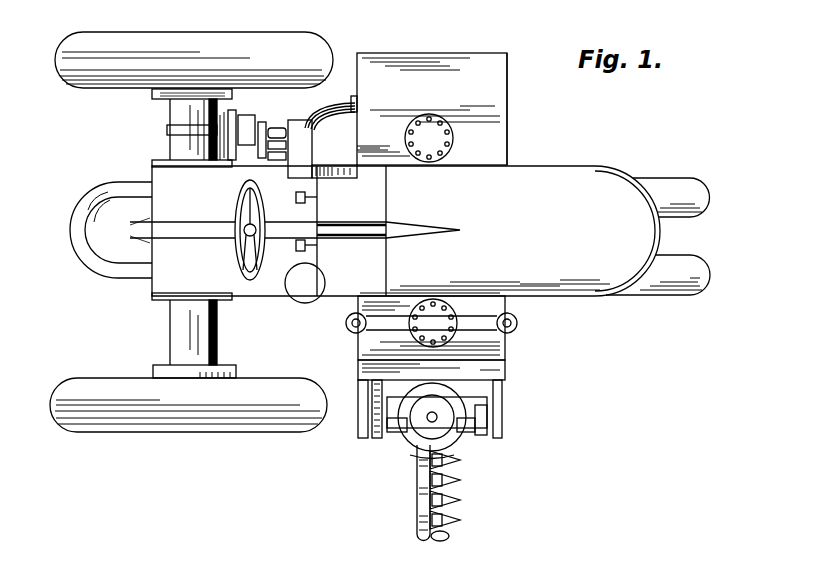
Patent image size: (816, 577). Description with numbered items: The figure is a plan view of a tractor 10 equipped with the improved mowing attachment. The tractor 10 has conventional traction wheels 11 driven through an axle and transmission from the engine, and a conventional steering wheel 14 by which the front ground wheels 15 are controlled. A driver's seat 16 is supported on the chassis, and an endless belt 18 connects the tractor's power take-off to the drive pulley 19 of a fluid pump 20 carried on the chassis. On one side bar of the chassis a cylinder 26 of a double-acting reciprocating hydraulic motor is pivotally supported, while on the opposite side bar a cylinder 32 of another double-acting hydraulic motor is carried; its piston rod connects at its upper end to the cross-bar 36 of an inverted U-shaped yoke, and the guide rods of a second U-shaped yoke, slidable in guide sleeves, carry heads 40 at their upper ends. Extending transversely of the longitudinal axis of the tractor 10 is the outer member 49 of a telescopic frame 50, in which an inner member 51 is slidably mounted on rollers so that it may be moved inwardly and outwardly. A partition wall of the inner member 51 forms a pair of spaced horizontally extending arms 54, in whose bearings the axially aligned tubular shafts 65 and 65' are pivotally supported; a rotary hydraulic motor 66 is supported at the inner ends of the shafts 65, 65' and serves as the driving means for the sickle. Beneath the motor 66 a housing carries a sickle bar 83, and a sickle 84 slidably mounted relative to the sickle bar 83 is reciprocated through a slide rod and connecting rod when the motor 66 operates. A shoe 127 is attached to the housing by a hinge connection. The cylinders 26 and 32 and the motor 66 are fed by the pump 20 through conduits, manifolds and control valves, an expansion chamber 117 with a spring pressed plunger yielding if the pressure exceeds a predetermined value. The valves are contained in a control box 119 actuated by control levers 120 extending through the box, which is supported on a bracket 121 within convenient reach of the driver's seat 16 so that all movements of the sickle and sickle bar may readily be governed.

The tractor 10 is at (560, 192).
The traction wheels 11 is at (115, 35).
The steering wheel 14 is at (242, 205).
The front ground wheels 15 is at (700, 197).
The driver's seat 16 is at (82, 205).
The endless belt 18 is at (172, 150).
The drive pulley 19 is at (170, 124).
The fluid pump 20 is at (248, 124).
The cylinder 26 is at (440, 135).
The cylinder 32 is at (410, 338).
The cross-bar 36 is at (470, 332).
The heads 40 is at (346, 321).
The outer member 49 is at (405, 64).
The telescopic frame 50 is at (508, 84).
The inner member 51 is at (488, 372).
The arms 54 is at (497, 431).
The tubular shafts 65 is at (417, 427).
The tubular shaft 65' is at (491, 453).
The rotary hydraulic motor 66 is at (415, 457).
The sickle bar 83 is at (447, 500).
The sickle 84 is at (422, 508).
The expansion chamber 117 is at (298, 290).
The control box 119 is at (318, 116).
The control levers 120 is at (288, 122).
The bracket 121 is at (330, 165).
The shoe 127 is at (495, 403).